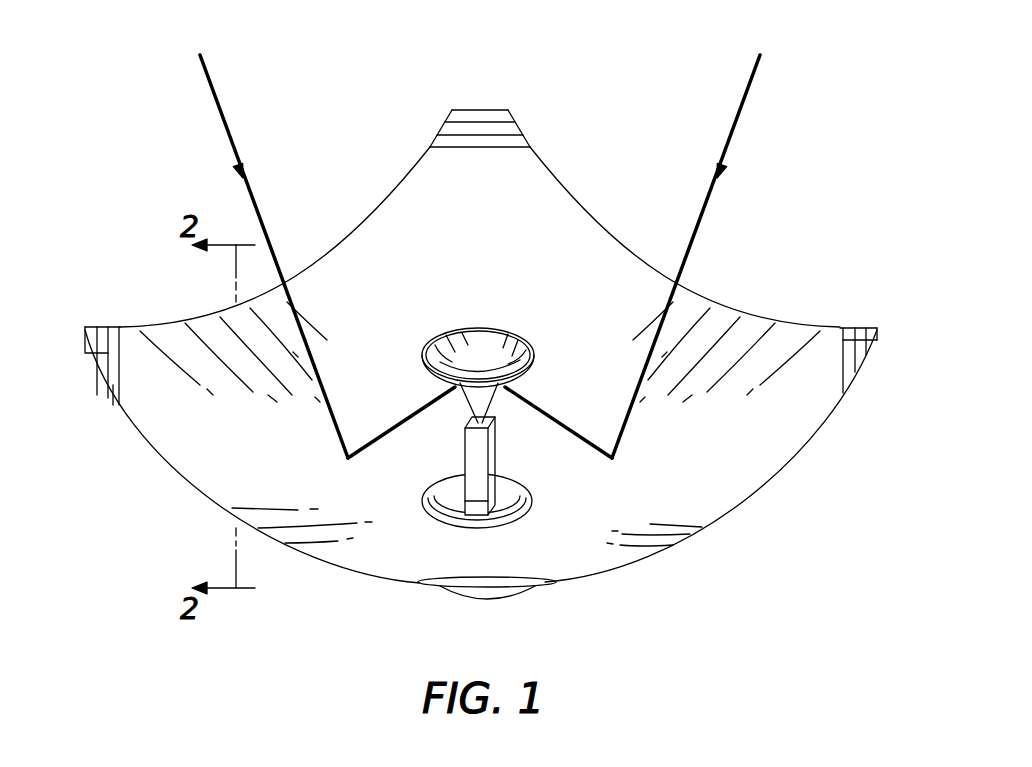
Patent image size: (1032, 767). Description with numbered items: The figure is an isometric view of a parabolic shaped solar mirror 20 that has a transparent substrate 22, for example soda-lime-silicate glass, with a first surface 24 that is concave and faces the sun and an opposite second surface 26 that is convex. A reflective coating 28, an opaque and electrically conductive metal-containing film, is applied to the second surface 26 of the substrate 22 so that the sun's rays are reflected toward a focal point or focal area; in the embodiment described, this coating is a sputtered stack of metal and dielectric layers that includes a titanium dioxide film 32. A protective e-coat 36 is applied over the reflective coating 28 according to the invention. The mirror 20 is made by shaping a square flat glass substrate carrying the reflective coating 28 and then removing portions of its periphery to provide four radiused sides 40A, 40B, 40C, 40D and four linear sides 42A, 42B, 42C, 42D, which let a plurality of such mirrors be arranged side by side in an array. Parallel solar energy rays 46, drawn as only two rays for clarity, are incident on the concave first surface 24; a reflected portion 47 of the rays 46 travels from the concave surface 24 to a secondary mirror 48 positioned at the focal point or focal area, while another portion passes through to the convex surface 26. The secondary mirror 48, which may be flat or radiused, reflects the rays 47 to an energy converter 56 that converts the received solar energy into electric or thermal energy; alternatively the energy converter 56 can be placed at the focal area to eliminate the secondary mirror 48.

The parabolic shaped solar mirror 20 is at (786, 182).
The transparent substrate 22 is at (517, 146).
The first surface 24 is at (157, 437).
The second surface 26 is at (495, 132).
The reflective coating 28 is at (458, 128).
The titanium dioxide film 32 is at (112, 400).
The protective e-coat 36 is at (468, 120).
The radiused side 40A is at (362, 580).
The radiused side 40B is at (360, 226).
The radiused side 40C is at (612, 236).
The radiused side 40D is at (722, 516).
The linear side 42A is at (495, 580).
The linear side 42B is at (85, 346).
The linear side 42C is at (483, 110).
The linear side 42D is at (878, 330).
The solar energy rays 46 is at (303, 331).
The reflected portion of rays 47 is at (400, 423).
The secondary mirror 48 is at (496, 340).
The energy converter 56 is at (462, 491).